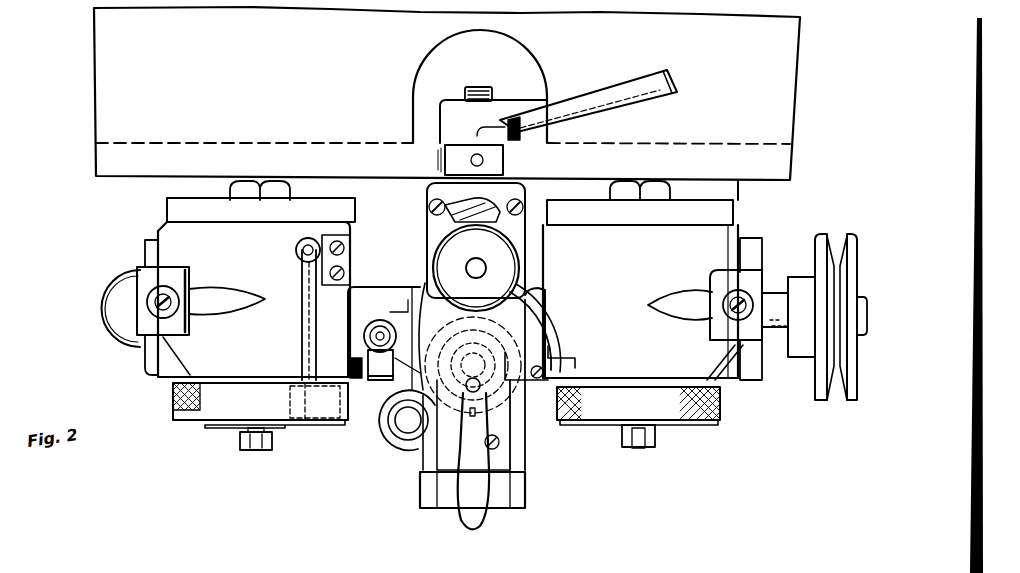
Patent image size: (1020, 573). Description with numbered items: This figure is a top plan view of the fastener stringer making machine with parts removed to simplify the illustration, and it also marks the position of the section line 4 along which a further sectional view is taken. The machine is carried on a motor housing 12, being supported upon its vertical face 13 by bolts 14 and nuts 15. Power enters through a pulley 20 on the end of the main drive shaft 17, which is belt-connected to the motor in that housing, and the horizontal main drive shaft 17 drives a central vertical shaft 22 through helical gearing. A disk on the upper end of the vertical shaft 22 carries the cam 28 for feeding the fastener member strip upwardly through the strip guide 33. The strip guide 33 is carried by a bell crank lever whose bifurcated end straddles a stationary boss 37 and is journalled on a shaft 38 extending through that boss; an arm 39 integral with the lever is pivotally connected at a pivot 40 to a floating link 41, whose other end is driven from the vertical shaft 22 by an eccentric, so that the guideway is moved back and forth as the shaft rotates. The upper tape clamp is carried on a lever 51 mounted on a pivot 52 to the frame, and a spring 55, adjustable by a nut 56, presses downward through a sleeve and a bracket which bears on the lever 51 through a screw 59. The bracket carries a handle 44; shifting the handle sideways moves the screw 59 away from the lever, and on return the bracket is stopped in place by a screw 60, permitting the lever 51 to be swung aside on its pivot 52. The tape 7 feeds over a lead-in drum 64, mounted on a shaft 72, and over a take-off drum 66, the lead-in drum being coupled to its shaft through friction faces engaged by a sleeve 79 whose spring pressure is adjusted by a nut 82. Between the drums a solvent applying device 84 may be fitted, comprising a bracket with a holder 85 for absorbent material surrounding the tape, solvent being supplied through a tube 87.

The section line 4- 4 is at (478, 52).
The tape 7 is at (92, 306).
The motor housing 12 is at (314, 226).
The vertical face 13 is at (790, 170).
The bolts 14 is at (463, 92).
The nuts 15 is at (622, 92).
The main drive shaft 17 is at (778, 298).
The pulley 20 is at (843, 376).
The central vertical shaft 22 is at (546, 364).
The cam 28 is at (592, 313).
The strip guide 33 is at (432, 460).
The stationary boss 37 is at (394, 433).
The shaft 38 is at (400, 420).
The arm 39 is at (372, 362).
The pivot 40 is at (378, 320).
The floating link 41 is at (410, 322).
The handle 44 is at (468, 516).
The lever 51 is at (513, 433).
The pivot 52 is at (527, 496).
The spring 55 is at (550, 346).
The nut 56 is at (506, 265).
The screw 59 is at (472, 326).
The screw 60 is at (483, 212).
The lead-in drum 64 is at (178, 416).
The take-off drum 66 is at (706, 423).
The shaft 72 is at (643, 450).
The sleeve 79 is at (214, 430).
The nut 82 is at (250, 452).
The solvent applying device 84 is at (300, 340).
The holder 85 is at (295, 398).
The tube 87 is at (300, 250).